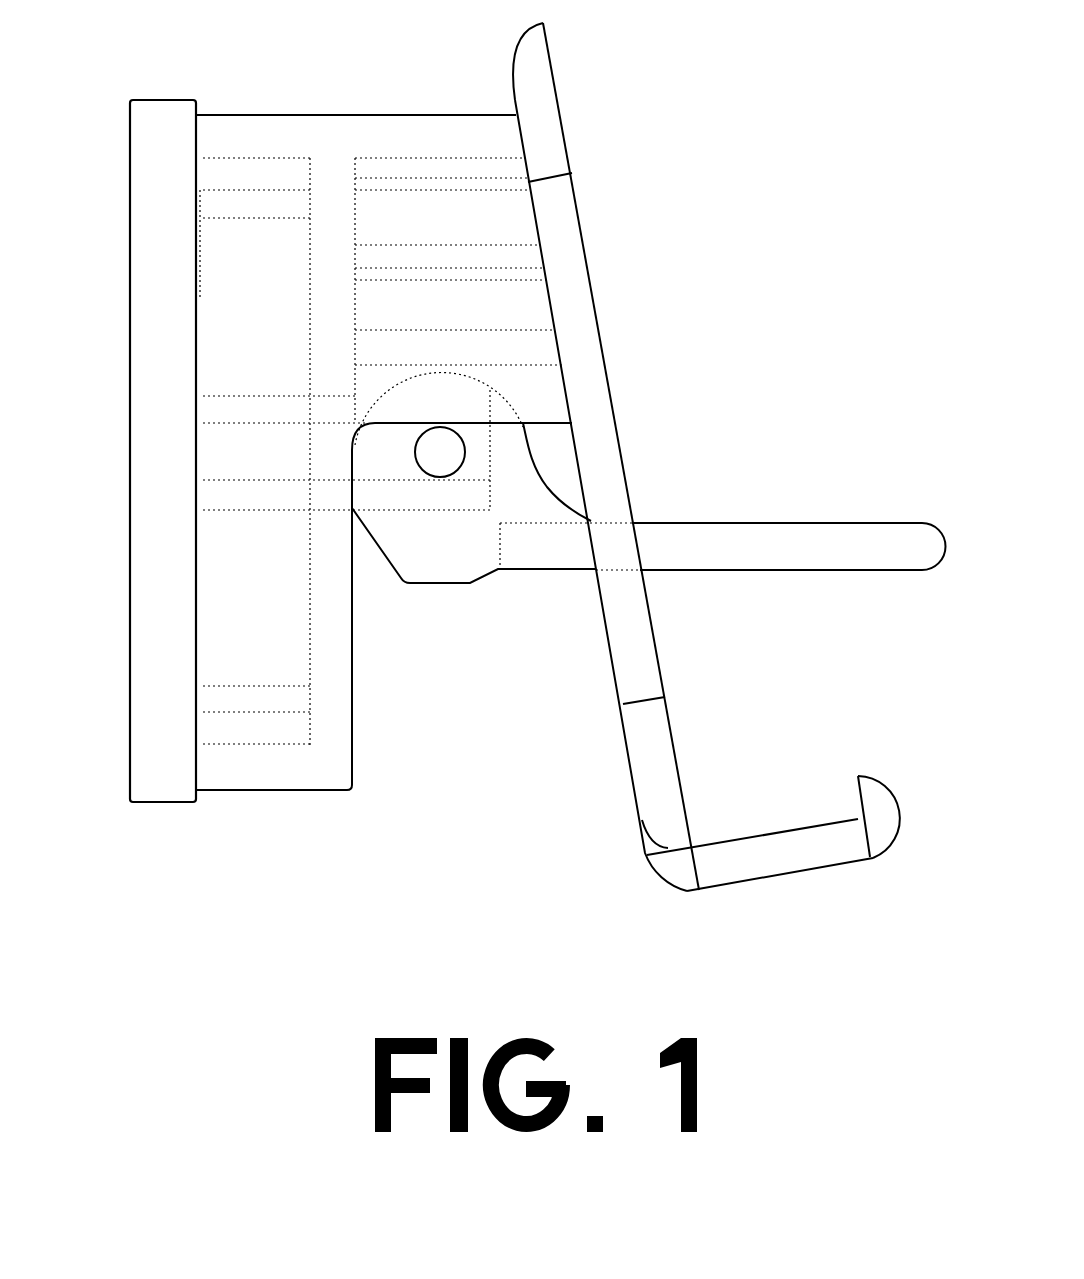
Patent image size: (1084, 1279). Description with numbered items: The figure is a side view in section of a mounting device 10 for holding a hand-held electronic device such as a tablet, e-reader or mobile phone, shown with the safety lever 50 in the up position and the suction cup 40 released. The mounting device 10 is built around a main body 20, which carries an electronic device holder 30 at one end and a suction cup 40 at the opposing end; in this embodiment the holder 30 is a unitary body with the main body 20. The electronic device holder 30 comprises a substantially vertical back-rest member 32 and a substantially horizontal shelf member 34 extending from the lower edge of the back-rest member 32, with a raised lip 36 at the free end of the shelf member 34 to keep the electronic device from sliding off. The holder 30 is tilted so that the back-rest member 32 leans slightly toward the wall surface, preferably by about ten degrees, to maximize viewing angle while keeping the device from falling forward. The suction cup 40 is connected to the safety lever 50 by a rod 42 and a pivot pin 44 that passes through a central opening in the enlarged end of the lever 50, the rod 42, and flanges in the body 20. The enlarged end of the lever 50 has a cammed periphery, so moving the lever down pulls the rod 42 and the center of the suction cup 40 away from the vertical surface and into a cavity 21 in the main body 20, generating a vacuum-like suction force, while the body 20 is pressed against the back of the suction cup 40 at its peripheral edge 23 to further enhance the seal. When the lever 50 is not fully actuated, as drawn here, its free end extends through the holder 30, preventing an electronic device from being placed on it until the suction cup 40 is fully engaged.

The mounting device 10 is at (735, 107).
The main body 20 is at (335, 113).
The cavity 21 is at (222, 327).
The peripheral edge 23 is at (196, 764).
The electronic device holder 30 is at (560, 68).
The back-rest member 32 is at (568, 210).
The shelf member 34 is at (771, 862).
The raised lip 36 is at (873, 790).
The suction cup 40 is at (160, 99).
The rod 42 is at (277, 445).
The pivot pin 44 is at (436, 457).
The safety lever 50 is at (862, 528).